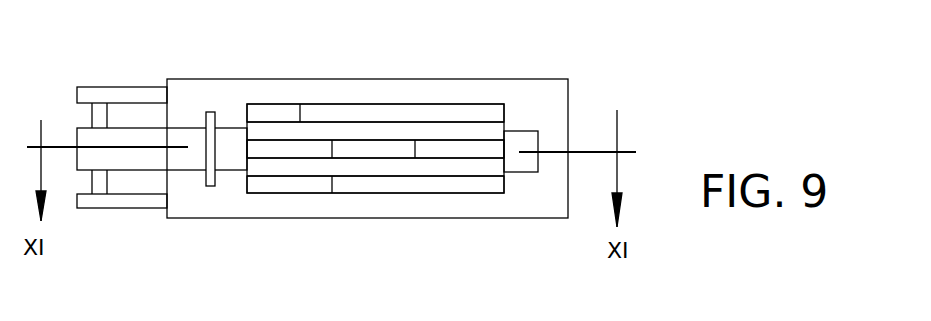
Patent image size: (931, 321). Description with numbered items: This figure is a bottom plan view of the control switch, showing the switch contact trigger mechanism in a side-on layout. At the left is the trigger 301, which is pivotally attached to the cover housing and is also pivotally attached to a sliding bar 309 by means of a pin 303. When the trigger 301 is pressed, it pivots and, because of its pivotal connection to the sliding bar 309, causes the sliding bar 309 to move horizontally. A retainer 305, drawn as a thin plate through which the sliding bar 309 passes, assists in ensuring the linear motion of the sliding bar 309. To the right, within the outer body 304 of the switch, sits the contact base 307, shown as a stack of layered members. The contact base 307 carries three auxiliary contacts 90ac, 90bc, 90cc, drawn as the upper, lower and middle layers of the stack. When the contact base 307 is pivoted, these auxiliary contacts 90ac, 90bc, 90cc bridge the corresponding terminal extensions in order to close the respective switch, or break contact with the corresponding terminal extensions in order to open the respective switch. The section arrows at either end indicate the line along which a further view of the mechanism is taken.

The trigger 301 is at (108, 95).
The pin 303 is at (100, 183).
The housing 304 is at (477, 88).
The retainer 305 is at (213, 122).
The contact base 307 is at (479, 132).
The sliding bar 309 is at (235, 142).
The auxiliary contact 90ac is at (279, 116).
The auxiliary contact 90bc is at (477, 188).
The auxiliary contact 90cc is at (382, 150).